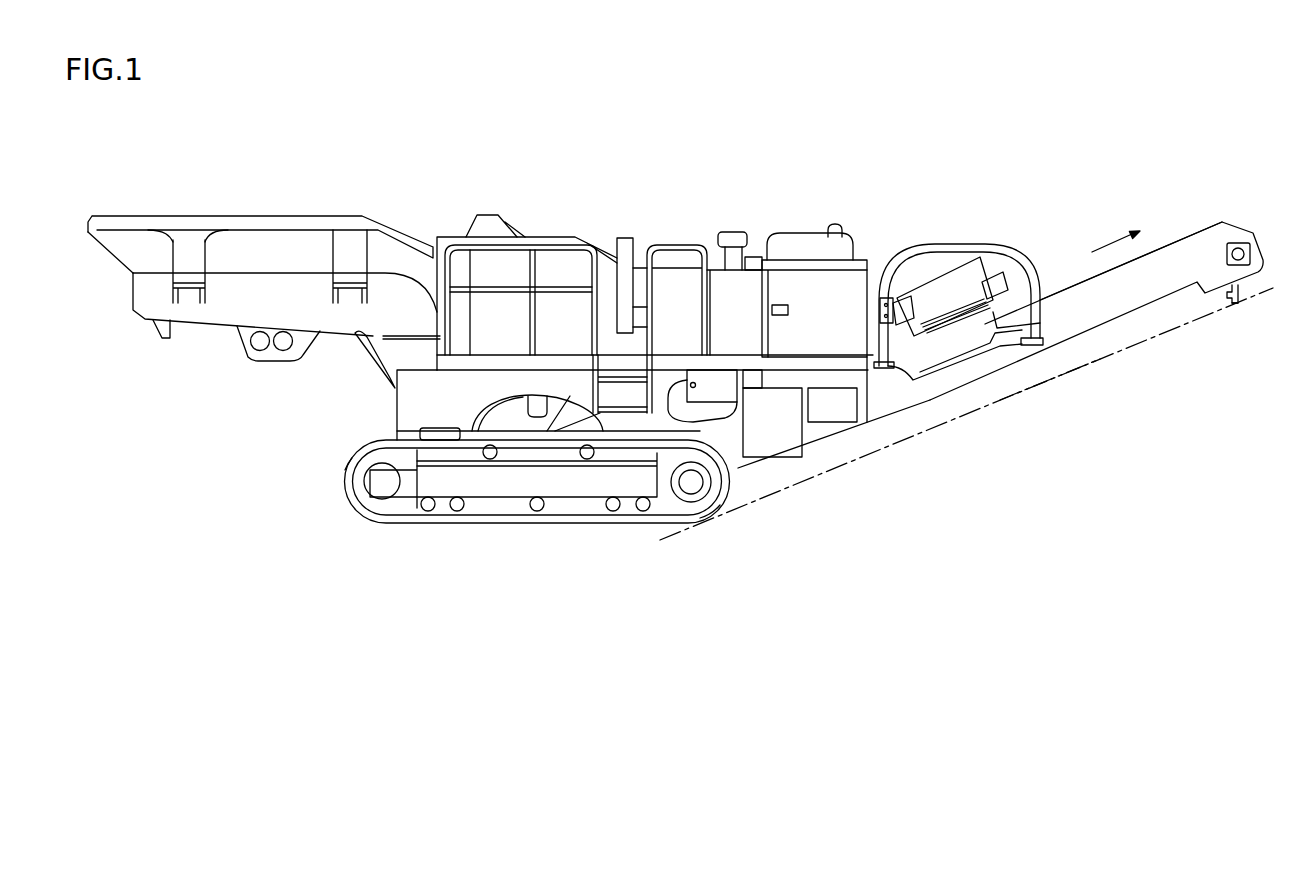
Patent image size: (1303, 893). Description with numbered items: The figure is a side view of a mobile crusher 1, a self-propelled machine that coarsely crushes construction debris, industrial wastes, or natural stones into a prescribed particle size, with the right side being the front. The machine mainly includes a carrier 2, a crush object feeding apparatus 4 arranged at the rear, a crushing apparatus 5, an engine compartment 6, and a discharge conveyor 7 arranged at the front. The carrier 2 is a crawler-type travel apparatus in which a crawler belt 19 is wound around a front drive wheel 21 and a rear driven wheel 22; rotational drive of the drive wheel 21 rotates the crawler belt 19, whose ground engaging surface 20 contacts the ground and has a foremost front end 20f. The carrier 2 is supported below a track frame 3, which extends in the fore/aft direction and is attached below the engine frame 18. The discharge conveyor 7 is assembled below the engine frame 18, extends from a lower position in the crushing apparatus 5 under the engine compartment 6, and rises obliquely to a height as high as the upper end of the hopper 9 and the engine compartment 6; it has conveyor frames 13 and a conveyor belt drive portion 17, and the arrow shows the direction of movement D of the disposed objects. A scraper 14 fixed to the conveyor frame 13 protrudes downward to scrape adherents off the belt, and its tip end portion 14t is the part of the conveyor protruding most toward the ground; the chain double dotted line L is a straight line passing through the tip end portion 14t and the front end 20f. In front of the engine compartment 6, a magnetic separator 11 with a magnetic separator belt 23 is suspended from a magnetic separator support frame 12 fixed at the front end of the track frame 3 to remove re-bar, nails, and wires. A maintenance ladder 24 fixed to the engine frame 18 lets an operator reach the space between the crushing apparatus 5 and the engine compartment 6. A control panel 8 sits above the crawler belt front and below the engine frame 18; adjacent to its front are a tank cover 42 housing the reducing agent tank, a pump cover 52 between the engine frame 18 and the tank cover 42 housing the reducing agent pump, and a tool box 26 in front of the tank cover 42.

The mobile crusher 1 is at (1048, 190).
The carrier 2 is at (420, 527).
The track frame 3 is at (722, 422).
The crush object feeding apparatus 4 is at (215, 212).
The crushing apparatus 5 is at (446, 235).
The engine compartment 6 is at (788, 235).
The discharge conveyor 7 is at (1080, 338).
The control panel 8 is at (668, 455).
The hopper 9 is at (313, 212).
The magnetic separator 11 is at (935, 280).
The magnetic separator support frame 12 is at (968, 242).
The conveyor frame 13 is at (1180, 257).
The scraper 14 is at (1245, 297).
The tip end portion 14t is at (1230, 305).
The conveyor belt drive portion 17 is at (1235, 245).
The engine frame 18 is at (847, 362).
The crawler belt 19 is at (348, 473).
The ground engaging surface 20 is at (503, 523).
The front end 20f is at (705, 520).
The drive wheel 21 is at (692, 483).
The driven wheel 22 is at (360, 484).
The magnetic separator belt 23 is at (957, 337).
The maintenance ladder 24 is at (608, 427).
The tool box 26 is at (832, 408).
The tank cover 42 is at (773, 437).
The pump cover 52 is at (753, 377).
The direction of movement D is at (1110, 237).
The chain double dotted line L is at (1040, 385).